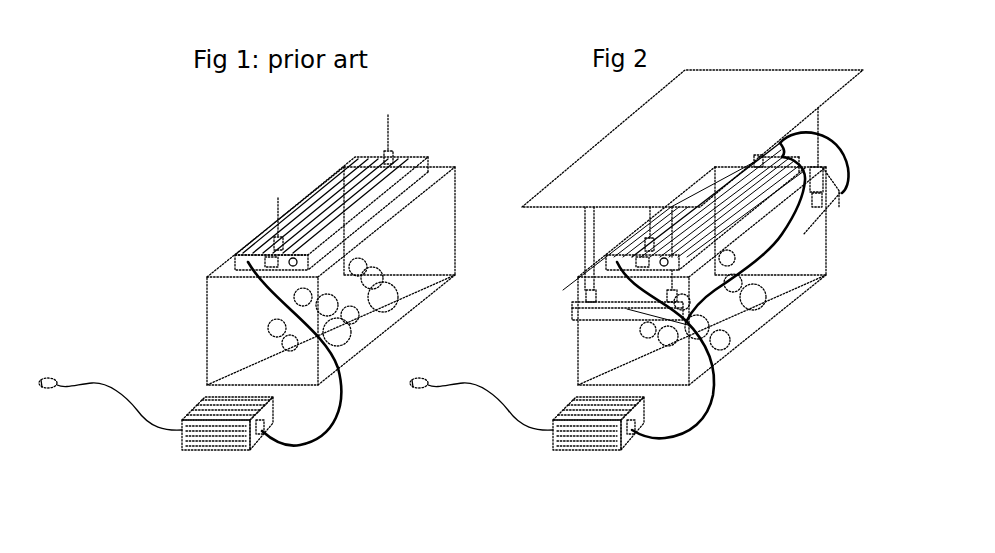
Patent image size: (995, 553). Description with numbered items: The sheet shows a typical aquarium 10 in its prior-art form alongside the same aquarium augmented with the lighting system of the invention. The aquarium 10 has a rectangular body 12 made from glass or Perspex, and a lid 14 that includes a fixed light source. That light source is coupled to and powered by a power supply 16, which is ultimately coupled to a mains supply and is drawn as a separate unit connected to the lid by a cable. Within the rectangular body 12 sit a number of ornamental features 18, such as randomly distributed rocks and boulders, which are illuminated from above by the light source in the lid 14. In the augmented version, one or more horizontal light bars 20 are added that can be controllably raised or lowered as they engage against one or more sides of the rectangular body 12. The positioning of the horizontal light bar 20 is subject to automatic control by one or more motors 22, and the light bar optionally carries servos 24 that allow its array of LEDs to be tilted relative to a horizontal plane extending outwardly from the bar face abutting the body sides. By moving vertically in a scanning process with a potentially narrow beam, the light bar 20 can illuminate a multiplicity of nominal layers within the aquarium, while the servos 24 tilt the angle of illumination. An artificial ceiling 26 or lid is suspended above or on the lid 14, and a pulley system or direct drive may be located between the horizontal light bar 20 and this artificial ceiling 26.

In FIG. 1, the aquarium 10 is at (297, 167).
In FIG. 1, the rectangular body 12 is at (438, 248).
In FIG. 2, the rectangular body 12 is at (478, 231).
In FIG. 1, the lid 14 is at (330, 192).
In FIG. 1, the power supply 16 is at (220, 437).
In FIG. 2, the power supply 16 is at (620, 447).
In FIG. 1, the ornamental features 18 is at (383, 300).
In FIG. 2, the ornamental features 18 is at (713, 332).
In FIG. 2, the horizontal light bar 20 is at (694, 308).
In FIG. 2, the motor 22 is at (568, 298).
In FIG. 2, the servo 24 is at (577, 315).
In FIG. 2, the artificial ceiling 26 is at (783, 68).